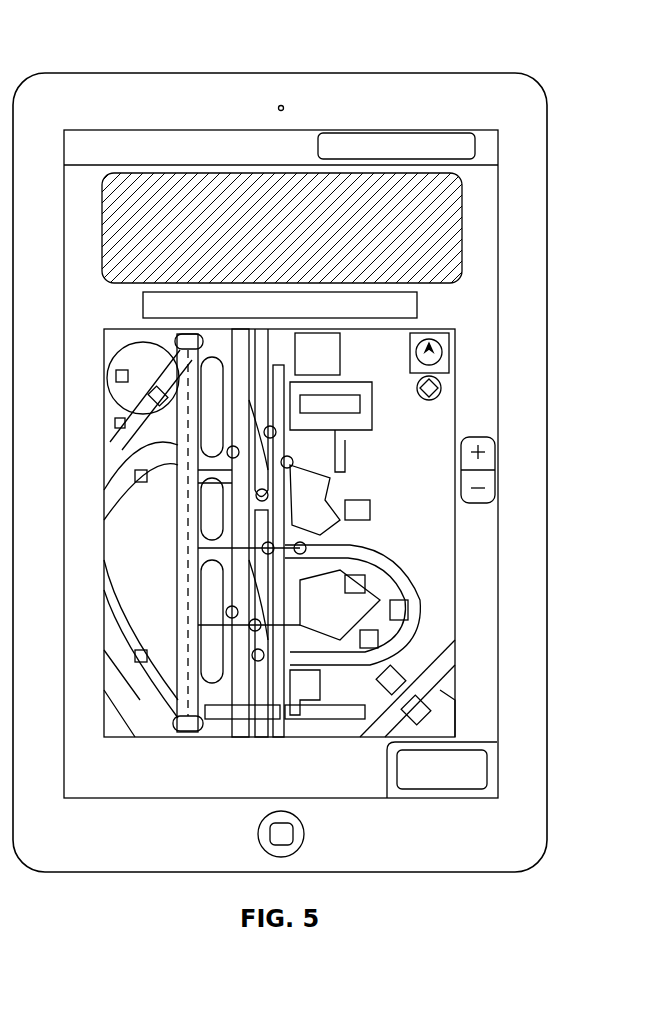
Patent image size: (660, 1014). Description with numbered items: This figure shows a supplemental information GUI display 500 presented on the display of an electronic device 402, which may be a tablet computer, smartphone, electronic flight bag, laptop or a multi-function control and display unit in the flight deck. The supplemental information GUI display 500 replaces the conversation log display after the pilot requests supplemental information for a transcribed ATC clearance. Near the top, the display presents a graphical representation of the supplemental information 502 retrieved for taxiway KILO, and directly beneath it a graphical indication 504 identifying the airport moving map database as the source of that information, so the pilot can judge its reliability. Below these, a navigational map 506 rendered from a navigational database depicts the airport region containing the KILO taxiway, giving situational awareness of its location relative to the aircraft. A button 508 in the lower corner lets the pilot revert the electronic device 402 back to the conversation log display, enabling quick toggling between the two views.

The electronic device 402 is at (282, 72).
The supplemental information GUI display 500 is at (100, 118).
The supplemental information 502 is at (462, 216).
The graphical indication 504 is at (400, 310).
The navigational map 506 is at (420, 547).
The button 508 is at (492, 768).